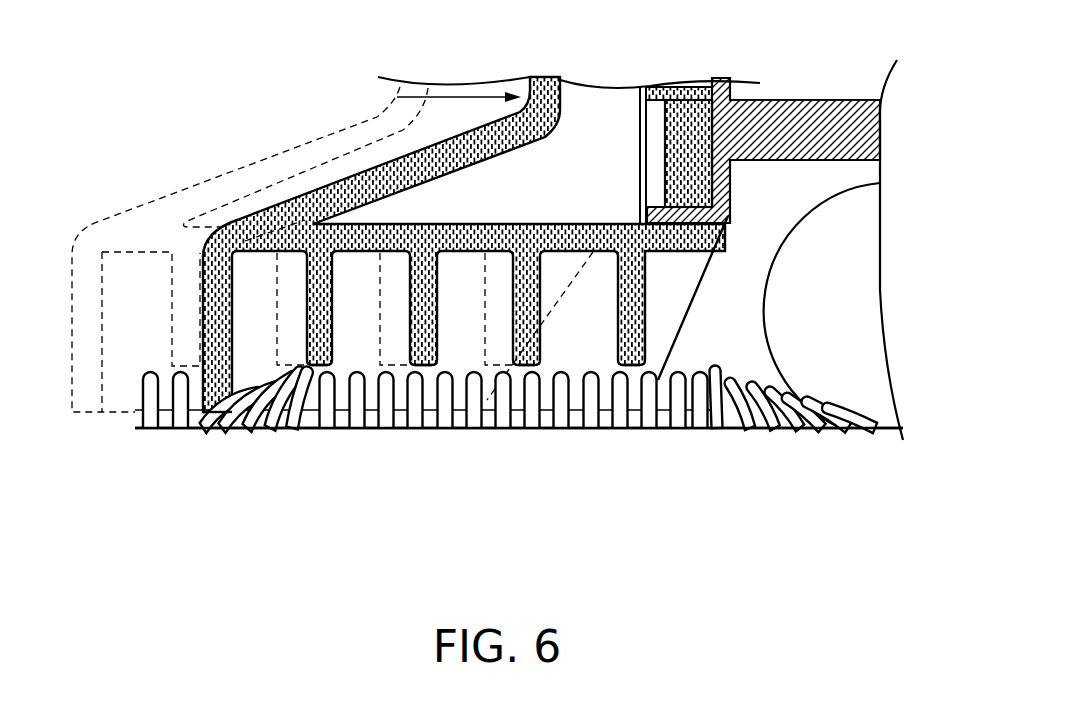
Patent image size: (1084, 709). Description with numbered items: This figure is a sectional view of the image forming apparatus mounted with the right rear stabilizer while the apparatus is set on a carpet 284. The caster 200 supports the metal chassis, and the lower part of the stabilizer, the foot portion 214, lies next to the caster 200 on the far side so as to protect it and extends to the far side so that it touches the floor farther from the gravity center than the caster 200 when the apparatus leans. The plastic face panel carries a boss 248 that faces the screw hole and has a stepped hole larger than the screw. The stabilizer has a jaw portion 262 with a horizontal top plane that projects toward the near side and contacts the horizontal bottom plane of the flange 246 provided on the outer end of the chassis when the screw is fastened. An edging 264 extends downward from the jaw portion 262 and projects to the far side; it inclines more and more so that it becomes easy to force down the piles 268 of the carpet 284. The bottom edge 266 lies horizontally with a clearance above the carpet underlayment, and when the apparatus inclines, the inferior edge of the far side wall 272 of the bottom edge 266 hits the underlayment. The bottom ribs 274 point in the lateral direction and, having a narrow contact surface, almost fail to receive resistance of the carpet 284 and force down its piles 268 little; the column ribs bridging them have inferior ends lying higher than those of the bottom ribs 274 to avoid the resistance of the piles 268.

The caster 200 is at (845, 213).
The foot portion 214 is at (397, 158).
The flange 246 is at (730, 215).
The boss 248 is at (687, 103).
The jaw portion 262 is at (693, 250).
The edging 264 is at (703, 300).
The bottom edge 266 is at (400, 410).
The bristles 268 is at (640, 368).
The far side wall 272 is at (200, 413).
The bottom ribs 274 is at (472, 342).
The carpet 284 is at (225, 430).